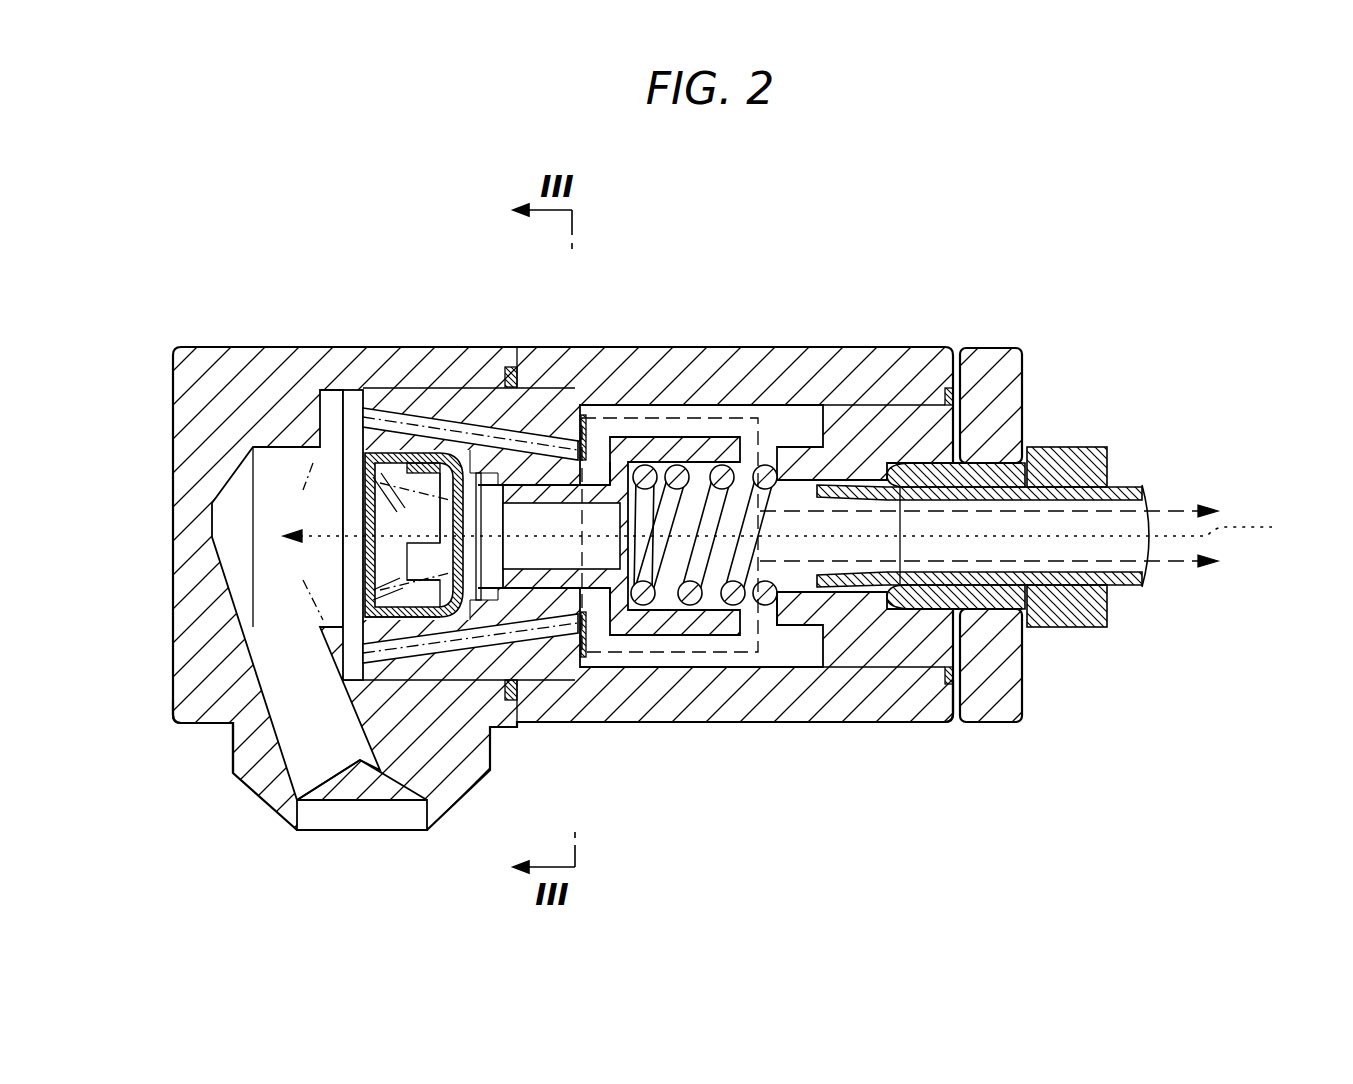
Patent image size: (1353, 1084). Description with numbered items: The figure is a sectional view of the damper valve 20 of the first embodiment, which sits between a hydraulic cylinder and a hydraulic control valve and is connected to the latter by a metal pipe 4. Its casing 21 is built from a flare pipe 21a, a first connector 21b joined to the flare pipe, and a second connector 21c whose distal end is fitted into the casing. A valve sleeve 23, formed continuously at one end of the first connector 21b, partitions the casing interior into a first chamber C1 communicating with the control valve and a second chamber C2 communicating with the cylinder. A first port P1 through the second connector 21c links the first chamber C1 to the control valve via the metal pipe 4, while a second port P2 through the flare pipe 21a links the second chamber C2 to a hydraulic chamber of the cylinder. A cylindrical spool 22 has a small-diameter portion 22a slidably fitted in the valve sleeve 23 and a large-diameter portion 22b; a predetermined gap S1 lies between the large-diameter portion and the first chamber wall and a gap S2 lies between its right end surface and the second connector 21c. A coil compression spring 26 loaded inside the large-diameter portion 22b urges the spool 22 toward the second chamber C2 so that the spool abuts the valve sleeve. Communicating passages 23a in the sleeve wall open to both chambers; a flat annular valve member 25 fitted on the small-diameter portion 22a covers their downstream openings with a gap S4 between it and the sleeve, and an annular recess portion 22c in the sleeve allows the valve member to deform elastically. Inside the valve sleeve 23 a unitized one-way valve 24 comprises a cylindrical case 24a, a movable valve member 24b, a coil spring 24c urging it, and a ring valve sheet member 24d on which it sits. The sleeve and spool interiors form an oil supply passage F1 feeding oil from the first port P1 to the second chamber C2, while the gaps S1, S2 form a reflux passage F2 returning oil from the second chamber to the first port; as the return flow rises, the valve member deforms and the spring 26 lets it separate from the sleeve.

The metal pipe 4 is at (1127, 487).
The damper valve 20 is at (981, 214).
The casing 21 is at (864, 346).
The flare pipe 21a is at (212, 700).
The first connector 21b is at (895, 700).
The second connector 21c is at (993, 700).
The spool 22 is at (714, 650).
The small-diameter portion 22a is at (533, 490).
The large-diameter portion 22b is at (665, 445).
The annular recess portion 22c is at (600, 468).
The valve sleeve 23 is at (496, 405).
The communicating passage 23a is at (395, 410).
The one-way valve 24 is at (389, 440).
The cylindrical case 24a is at (432, 655).
The movable valve member 24b is at (455, 520).
The coil spring 24c is at (458, 578).
The ring valve sheet member 24d is at (445, 408).
The valve member 25 is at (612, 615).
The coil compression spring 26 is at (735, 412).
The first chamber C1 is at (790, 428).
The second chamber C2 is at (277, 472).
The first port P1 is at (797, 577).
The second port P2 is at (363, 815).
The gap S1 is at (670, 643).
The gap S2 is at (790, 640).
The gap S4 is at (583, 655).
The oil supply passage F1 is at (800, 523).
The reflux passage F2 is at (1172, 505).